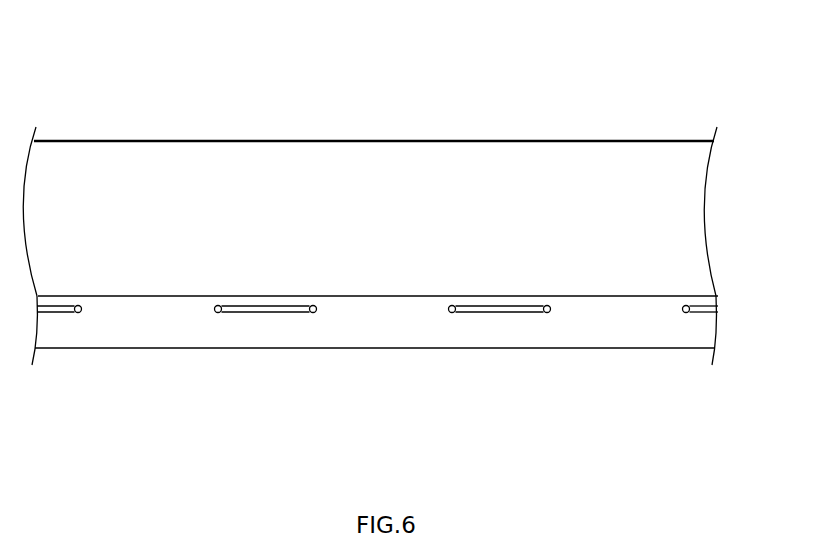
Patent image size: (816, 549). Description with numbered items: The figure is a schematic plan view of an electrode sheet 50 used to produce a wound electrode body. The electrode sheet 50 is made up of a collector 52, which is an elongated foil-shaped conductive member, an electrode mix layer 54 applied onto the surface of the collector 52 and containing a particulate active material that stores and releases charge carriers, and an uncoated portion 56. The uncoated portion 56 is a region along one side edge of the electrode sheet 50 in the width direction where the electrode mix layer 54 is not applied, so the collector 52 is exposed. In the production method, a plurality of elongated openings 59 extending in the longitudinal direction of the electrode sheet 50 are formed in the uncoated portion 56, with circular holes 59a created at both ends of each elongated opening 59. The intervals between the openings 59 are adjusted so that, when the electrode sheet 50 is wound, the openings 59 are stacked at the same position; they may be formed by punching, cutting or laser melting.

The electrode sheet 50 is at (71, 37).
The collector 52 is at (392, 350).
The electrode mix layer 54 is at (595, 165).
The uncoated portion 56 is at (618, 340).
The elongated opening 59 is at (55, 315).
The circular hole 59a is at (215, 316).